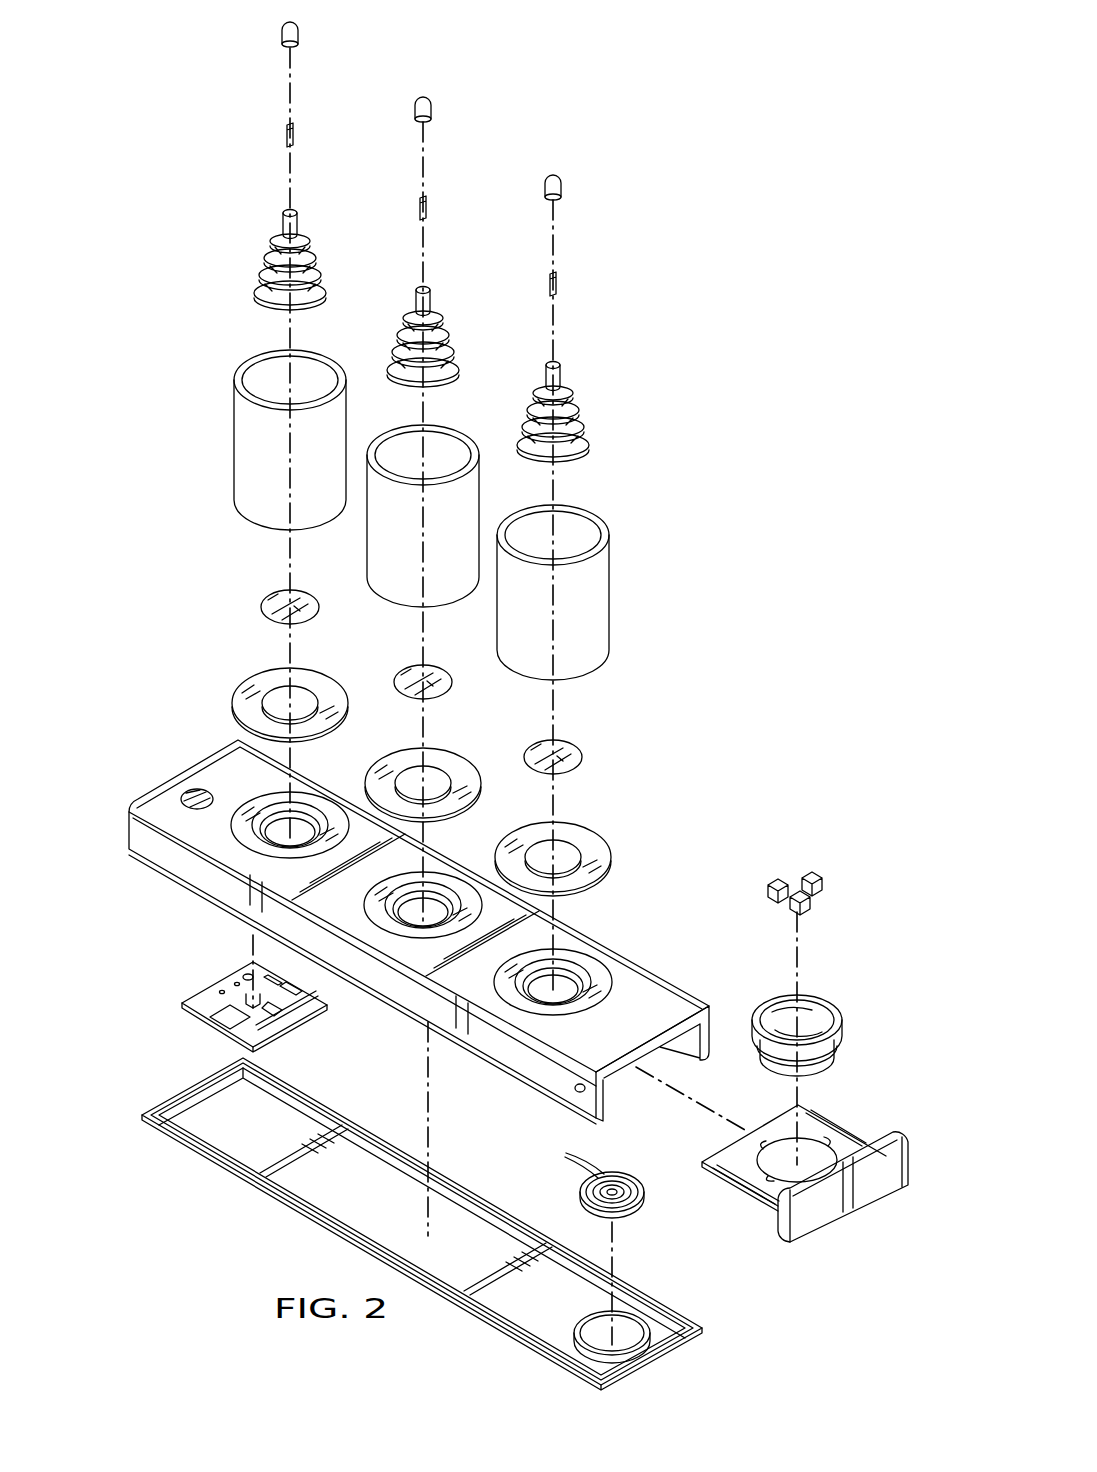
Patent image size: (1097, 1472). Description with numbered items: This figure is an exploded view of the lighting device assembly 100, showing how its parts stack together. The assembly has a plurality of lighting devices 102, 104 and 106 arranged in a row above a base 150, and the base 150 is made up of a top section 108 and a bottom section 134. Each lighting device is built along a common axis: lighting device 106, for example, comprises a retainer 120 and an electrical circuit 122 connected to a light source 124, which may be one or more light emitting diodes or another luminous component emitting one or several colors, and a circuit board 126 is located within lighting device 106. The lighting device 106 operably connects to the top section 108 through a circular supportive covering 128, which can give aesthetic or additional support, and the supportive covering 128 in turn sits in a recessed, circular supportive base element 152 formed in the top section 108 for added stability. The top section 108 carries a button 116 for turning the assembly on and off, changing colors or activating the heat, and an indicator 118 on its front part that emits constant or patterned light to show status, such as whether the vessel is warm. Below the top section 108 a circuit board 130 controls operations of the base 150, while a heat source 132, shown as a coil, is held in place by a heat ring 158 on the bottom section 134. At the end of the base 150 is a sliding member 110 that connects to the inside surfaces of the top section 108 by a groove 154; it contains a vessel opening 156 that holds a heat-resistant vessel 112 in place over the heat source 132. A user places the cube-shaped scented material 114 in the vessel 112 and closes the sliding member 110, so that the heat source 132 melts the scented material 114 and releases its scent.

The lighting device assembly 100 is at (808, 372).
The lighting device 102 is at (270, 356).
The lighting device 104 is at (402, 428).
The lighting device 106 is at (612, 586).
The top section 108 is at (230, 760).
The sliding member 110 is at (846, 1210).
The vessel 112 is at (832, 1004).
The scented material 114 is at (836, 856).
The button 116 is at (192, 785).
The indicator 118 is at (574, 1096).
The retainer 120 is at (572, 384).
The electrical circuit 122 is at (566, 286).
The light source 124 is at (556, 176).
The circuit board 126 is at (596, 722).
The supportive covering 128 is at (616, 810).
The circuit board 130 is at (228, 978).
The heat source 132 is at (630, 1212).
The bottom section 134 is at (688, 1312).
The base 150 is at (684, 941).
The supportive base element 152 is at (590, 966).
The groove 154 is at (832, 1126).
The vessel opening 156 is at (778, 1136).
The heat ring 158 is at (578, 1320).